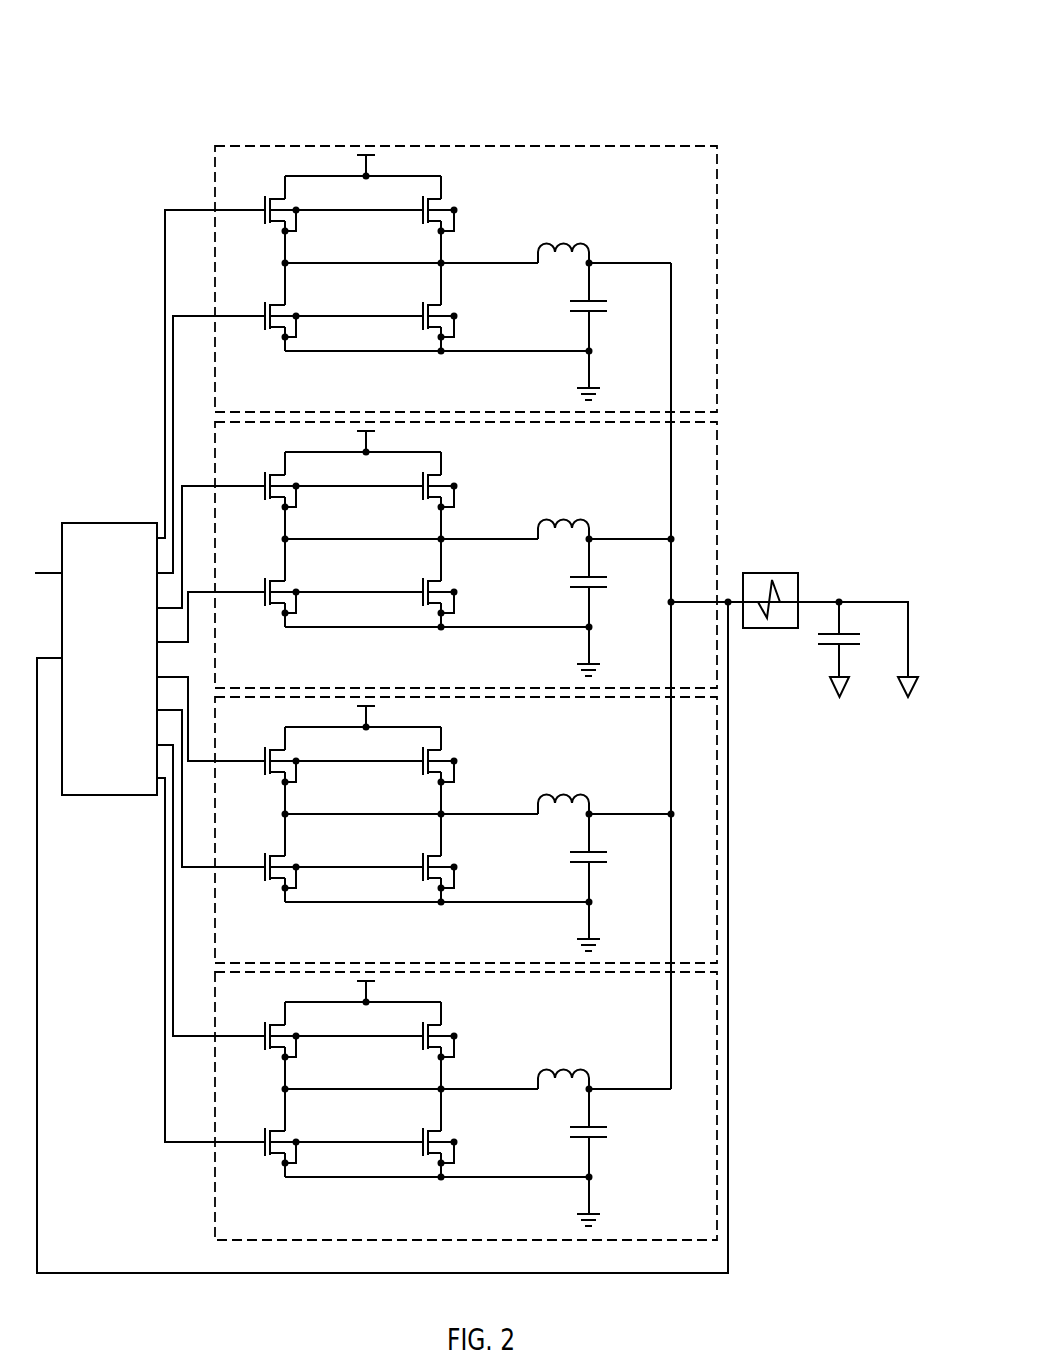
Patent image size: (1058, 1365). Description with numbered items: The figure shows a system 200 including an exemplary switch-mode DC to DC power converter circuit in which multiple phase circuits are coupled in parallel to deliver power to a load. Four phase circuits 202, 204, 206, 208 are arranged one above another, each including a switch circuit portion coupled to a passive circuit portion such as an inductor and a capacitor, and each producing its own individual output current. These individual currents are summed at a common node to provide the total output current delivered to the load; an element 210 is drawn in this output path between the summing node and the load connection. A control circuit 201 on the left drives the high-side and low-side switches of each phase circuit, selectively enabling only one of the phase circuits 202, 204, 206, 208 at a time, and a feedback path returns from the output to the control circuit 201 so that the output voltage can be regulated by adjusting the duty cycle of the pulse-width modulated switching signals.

The multi-phase power converter 200 is at (170, 33).
The control circuit 201 is at (128, 694).
The phase circuit 202 is at (253, 175).
The phase circuit 204 is at (466, 555).
The phase circuit 206 is at (466, 830).
The phase circuit 208 is at (466, 1106).
The current sensor 210 is at (768, 573).